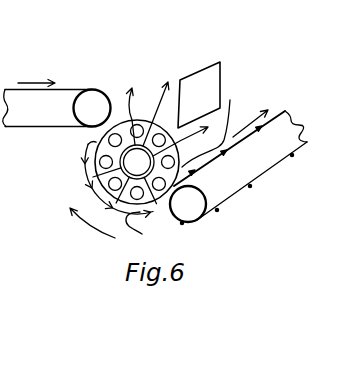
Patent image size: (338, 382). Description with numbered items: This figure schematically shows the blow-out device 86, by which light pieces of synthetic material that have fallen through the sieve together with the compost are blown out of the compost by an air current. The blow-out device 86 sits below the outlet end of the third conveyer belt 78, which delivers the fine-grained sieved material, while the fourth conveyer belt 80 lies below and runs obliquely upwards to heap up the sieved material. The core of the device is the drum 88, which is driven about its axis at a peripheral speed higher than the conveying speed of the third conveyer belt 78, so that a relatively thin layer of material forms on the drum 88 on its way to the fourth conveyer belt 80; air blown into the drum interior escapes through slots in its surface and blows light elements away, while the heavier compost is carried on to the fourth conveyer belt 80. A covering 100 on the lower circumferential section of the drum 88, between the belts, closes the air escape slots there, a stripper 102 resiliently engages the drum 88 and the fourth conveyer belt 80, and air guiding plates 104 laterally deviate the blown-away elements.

The third conveyer belt 78 is at (72, 89).
The fourth conveyer belt 80 is at (284, 111).
The blow-out device 86 is at (151, 77).
The drum 88 is at (85, 170).
The covering 100 is at (143, 231).
The stripper 102 is at (230, 100).
The air guiding plates 104 is at (202, 78).